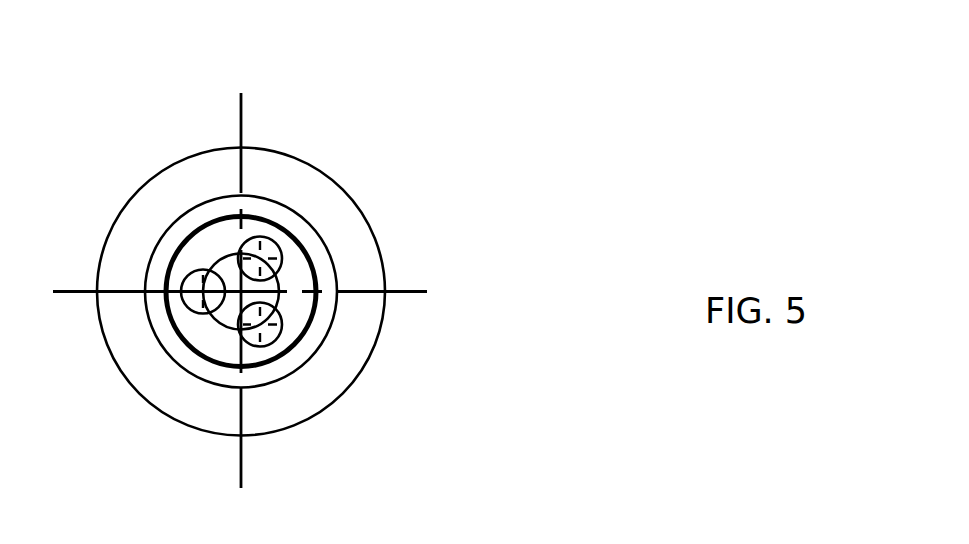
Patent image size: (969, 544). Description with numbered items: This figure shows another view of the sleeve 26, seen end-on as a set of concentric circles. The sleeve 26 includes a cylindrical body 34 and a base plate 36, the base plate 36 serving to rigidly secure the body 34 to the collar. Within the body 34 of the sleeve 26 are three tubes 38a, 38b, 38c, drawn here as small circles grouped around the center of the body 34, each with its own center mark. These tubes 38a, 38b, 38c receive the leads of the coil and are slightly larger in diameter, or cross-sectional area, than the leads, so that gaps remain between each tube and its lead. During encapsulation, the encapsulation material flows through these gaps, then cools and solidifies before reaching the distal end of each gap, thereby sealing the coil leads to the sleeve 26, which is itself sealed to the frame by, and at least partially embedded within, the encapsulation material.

The sleeve 26 is at (533, 165).
The cylindrical body 34 is at (203, 250).
The base plate 36 is at (325, 202).
The tube 38a is at (188, 307).
The tube 38b is at (263, 333).
The tube 38c is at (262, 240).